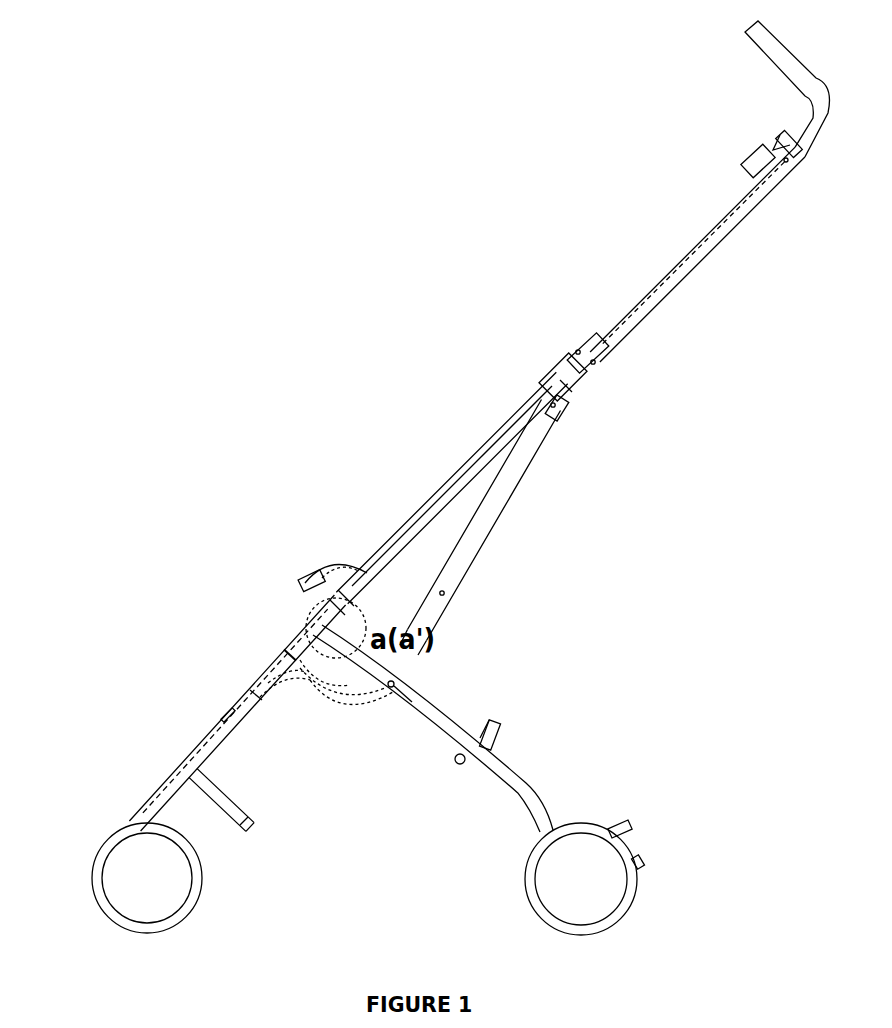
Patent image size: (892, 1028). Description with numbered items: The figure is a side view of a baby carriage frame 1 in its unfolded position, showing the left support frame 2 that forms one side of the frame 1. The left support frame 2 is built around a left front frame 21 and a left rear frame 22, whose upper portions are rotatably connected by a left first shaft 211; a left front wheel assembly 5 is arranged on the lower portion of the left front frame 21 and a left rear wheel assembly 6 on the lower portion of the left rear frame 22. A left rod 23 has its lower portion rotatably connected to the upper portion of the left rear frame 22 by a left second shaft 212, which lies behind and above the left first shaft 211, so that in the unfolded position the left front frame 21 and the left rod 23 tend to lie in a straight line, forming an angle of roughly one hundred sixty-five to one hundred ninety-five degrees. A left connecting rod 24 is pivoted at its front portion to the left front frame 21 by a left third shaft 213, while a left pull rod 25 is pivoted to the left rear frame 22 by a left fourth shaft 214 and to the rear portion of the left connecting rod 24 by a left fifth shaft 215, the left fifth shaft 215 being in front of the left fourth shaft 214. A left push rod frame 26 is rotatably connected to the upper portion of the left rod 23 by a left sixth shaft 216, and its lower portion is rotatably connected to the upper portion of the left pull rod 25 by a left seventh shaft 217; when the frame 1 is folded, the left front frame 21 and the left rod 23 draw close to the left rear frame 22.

The frame 1 is at (197, 592).
The left support frame 2 is at (250, 690).
The left front wheel assembly 5 is at (100, 850).
The left rear wheel assembly 6 is at (527, 887).
The left front frame 21 is at (193, 748).
The left rear frame 22 is at (513, 783).
The left rod 23 is at (435, 493).
The left connecting rod 24 is at (278, 693).
The left pull rod 25 is at (477, 537).
The left push rod frame 26 is at (632, 326).
The left first shaft 211 is at (280, 640).
The left second shaft 212 is at (333, 577).
The left third shaft 213 is at (223, 712).
The left fourth shaft 214 is at (407, 708).
The left fifth shaft 215 is at (336, 702).
The left sixth shaft 216 is at (577, 342).
The left seventh shaft 217 is at (563, 413).